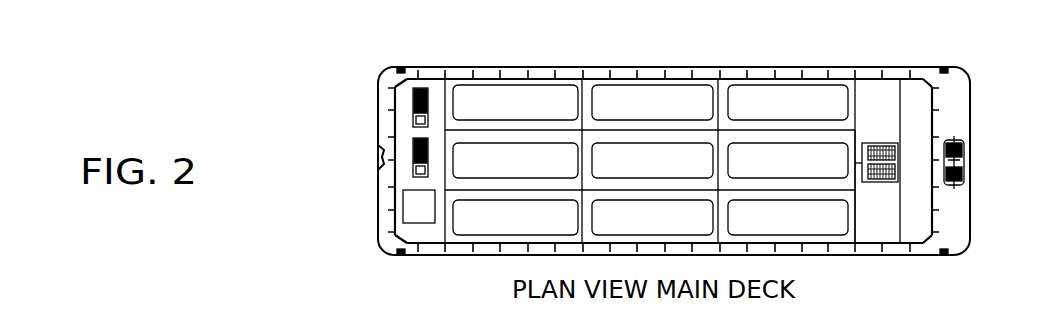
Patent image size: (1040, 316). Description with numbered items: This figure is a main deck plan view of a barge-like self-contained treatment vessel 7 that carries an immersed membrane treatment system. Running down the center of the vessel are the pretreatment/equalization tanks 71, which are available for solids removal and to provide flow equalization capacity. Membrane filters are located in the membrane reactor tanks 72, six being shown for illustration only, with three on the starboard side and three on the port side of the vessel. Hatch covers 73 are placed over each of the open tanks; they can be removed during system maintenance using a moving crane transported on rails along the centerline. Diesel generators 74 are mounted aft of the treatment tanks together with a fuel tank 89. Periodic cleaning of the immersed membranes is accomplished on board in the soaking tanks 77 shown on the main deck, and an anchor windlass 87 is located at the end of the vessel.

The vessel hull 7 is at (709, 161).
The pretreatment/equalization tanks 71 is at (490, 160).
The membrane reactor tanks 72 is at (564, 98).
The hatch covers 73 is at (837, 240).
The diesel generators 74 is at (415, 142).
The soaking tanks 77 is at (883, 181).
The anchor windlass 87 is at (958, 188).
The fuel tank 89 is at (418, 212).